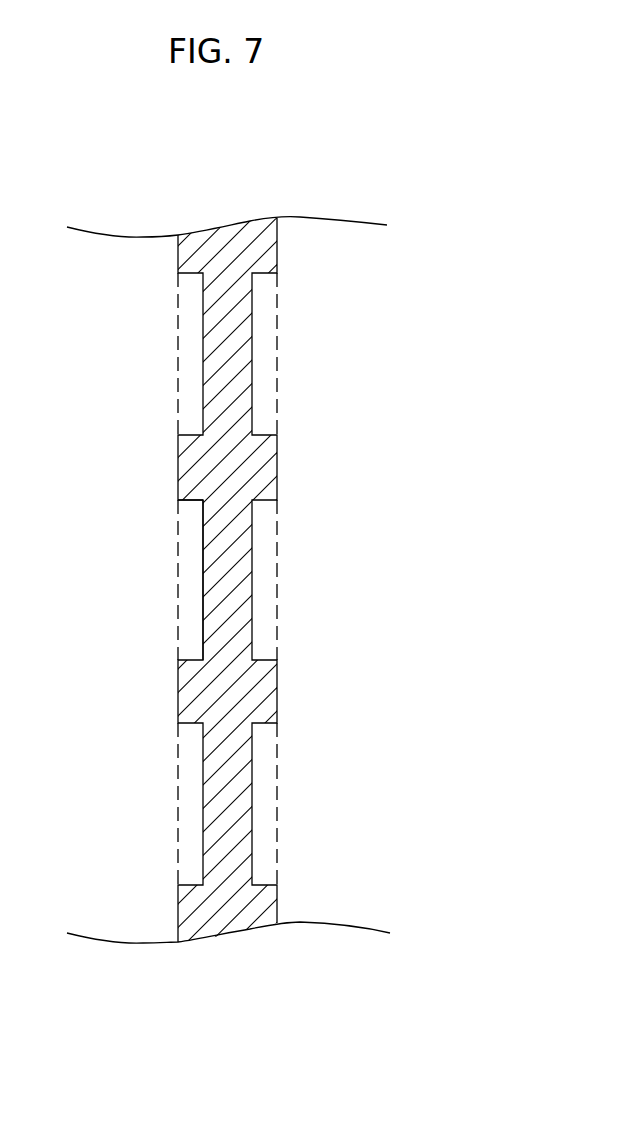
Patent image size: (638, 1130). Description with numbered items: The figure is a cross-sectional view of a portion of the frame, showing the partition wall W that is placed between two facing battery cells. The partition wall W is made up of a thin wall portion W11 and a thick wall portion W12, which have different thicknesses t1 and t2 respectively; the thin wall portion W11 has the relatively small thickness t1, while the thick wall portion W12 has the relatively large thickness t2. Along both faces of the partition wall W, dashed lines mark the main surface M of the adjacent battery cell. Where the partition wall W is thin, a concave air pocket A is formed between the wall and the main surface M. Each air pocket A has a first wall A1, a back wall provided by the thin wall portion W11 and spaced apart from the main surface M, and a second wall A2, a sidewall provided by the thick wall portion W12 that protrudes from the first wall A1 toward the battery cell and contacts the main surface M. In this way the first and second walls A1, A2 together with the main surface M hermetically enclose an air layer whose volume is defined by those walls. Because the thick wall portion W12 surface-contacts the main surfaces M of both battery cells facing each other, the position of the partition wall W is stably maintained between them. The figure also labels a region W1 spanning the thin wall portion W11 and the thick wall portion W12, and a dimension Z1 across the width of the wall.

The partition wall W is at (225, 200).
The main surface of the battery cell M is at (178, 355).
The air pocket A is at (190, 768).
The first wall A1 is at (203, 578).
The second wall A2 is at (192, 499).
The wall portion W1 is at (379, 595).
The thin wall portion W11 is at (228, 595).
The thick wall portion W12 is at (227, 675).
The thickness of the thin wall portion t1 is at (285, 805).
The thickness of the thick wall portion t2 is at (277, 695).
The width of wall in first direction Z1 is at (310, 1007).